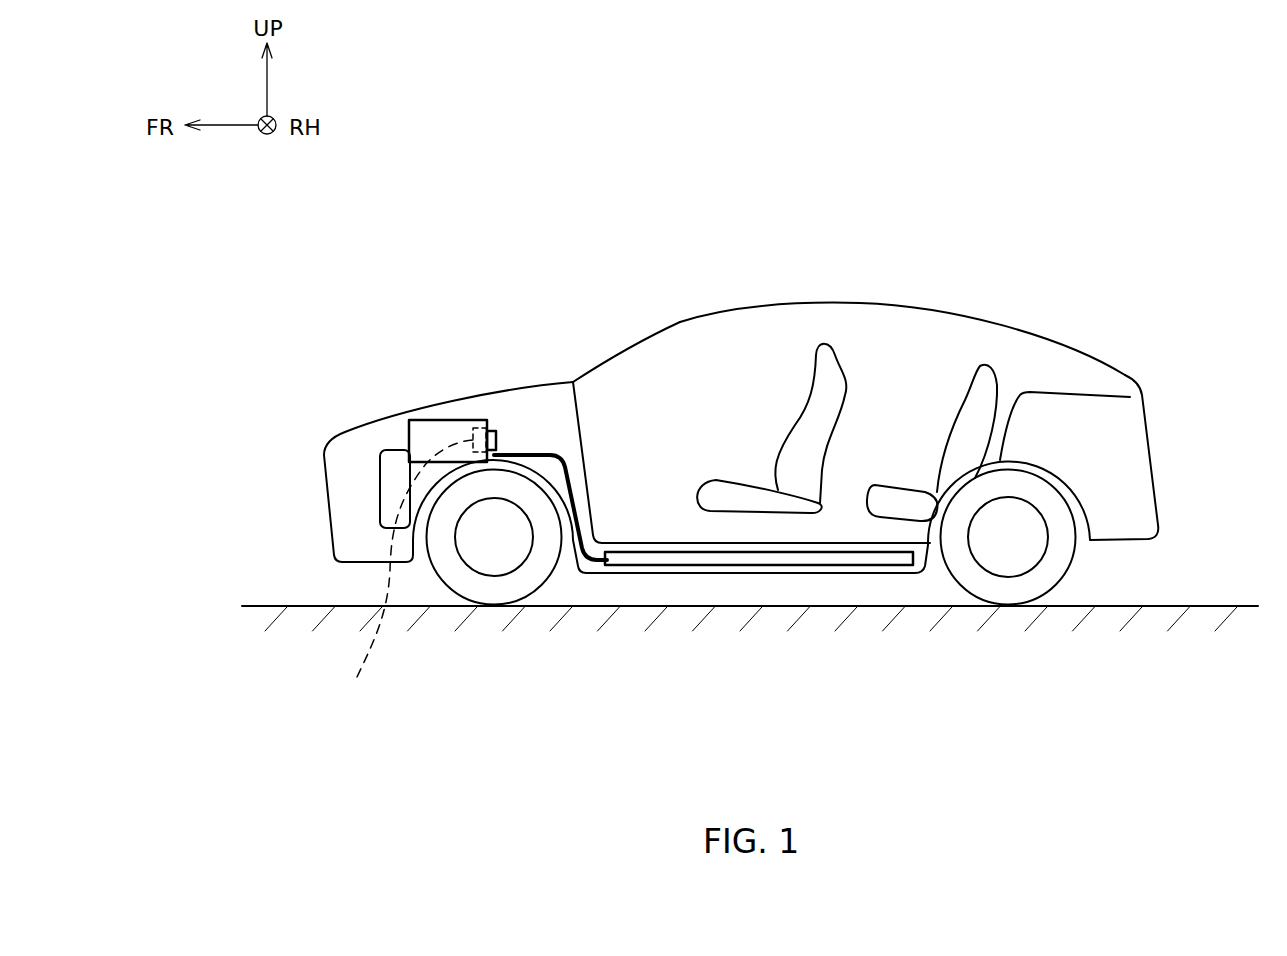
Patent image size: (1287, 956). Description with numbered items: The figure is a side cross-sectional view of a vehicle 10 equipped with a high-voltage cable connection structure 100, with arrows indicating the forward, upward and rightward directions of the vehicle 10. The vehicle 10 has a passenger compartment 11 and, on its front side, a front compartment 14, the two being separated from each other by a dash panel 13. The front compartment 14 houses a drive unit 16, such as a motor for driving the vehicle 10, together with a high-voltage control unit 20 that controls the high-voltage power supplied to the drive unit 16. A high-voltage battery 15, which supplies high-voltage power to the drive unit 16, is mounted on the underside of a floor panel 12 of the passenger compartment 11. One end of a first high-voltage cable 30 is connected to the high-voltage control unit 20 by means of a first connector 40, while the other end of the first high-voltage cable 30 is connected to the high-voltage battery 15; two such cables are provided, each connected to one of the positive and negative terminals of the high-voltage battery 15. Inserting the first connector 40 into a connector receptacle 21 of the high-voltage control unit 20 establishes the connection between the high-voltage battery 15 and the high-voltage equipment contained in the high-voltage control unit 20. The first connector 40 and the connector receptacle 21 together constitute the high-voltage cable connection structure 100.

The vehicle 10 is at (1170, 349).
The passenger compartment 11 is at (905, 343).
The floor panel 12 is at (842, 542).
The dash panel 13 is at (585, 457).
The front compartment 14 is at (352, 497).
The high-voltage battery 15 is at (792, 560).
The drive unit 16 is at (377, 467).
The high-voltage control unit 20 is at (425, 328).
The connector receptacle 21 is at (403, 574).
The first high-voltage cable 30 is at (544, 437).
The first connector 40 is at (506, 422).
The high-voltage cable connection structure 100 is at (491, 400).